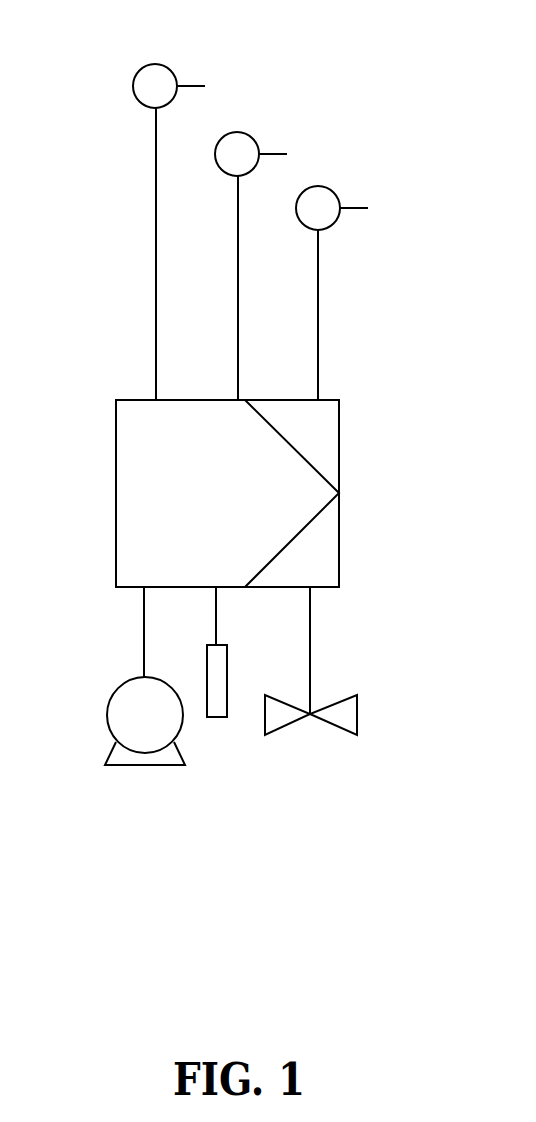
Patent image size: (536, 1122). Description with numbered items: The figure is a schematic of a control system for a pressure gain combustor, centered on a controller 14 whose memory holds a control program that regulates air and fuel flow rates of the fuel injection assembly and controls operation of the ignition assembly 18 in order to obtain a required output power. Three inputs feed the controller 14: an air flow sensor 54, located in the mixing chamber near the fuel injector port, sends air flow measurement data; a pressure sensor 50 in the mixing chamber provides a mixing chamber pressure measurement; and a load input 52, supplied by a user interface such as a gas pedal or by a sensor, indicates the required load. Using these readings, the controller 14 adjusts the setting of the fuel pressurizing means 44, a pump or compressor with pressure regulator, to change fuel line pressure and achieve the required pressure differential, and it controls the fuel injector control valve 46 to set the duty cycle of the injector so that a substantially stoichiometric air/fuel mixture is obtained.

The controller 14 is at (341, 440).
The ignition assembly 18 is at (215, 720).
The fuel pressurizing means 44 is at (140, 768).
The control valve 46 is at (288, 723).
The pressure sensor 50 is at (330, 191).
The load input 52 is at (247, 135).
The air flow sensor 54 is at (168, 64).